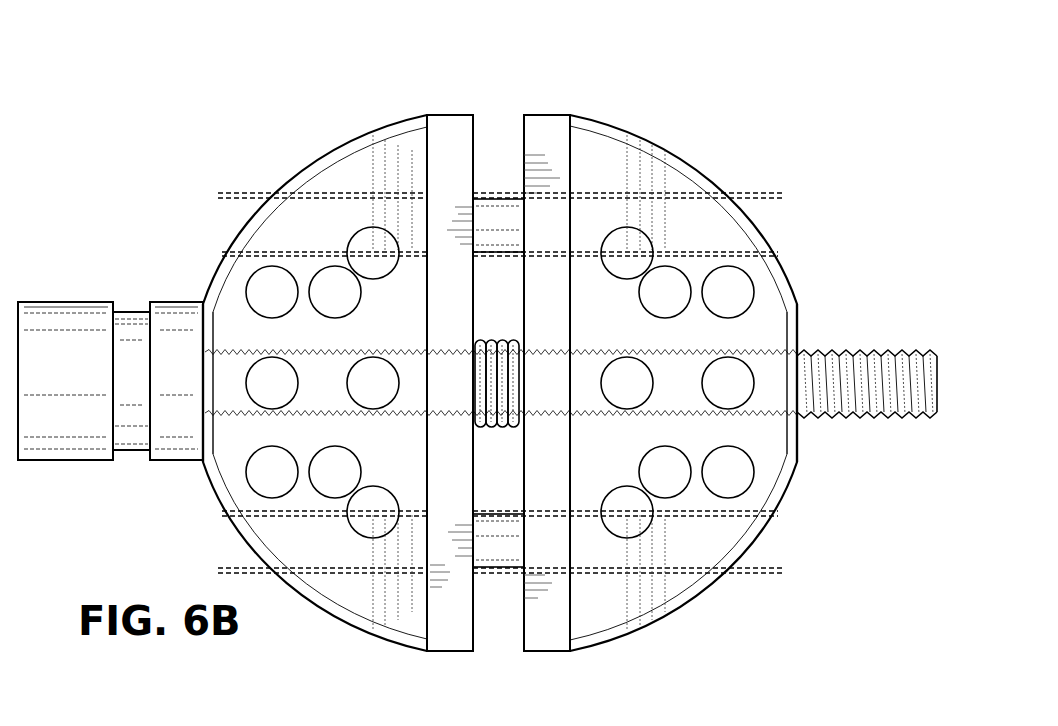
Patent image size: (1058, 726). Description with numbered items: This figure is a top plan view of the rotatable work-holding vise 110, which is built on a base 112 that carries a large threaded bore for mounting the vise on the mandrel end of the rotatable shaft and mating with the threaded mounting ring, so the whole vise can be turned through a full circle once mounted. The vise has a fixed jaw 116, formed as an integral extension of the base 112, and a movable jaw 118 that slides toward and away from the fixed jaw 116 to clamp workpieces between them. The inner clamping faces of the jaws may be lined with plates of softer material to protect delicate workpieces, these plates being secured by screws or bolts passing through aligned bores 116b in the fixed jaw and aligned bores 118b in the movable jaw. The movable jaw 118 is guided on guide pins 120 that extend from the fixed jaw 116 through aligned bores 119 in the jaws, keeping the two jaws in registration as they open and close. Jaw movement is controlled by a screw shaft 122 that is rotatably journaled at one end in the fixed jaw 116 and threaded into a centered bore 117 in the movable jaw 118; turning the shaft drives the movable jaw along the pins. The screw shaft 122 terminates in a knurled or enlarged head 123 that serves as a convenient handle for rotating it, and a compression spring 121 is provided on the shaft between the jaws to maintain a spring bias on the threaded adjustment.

The rotatable work-holding vise 110 is at (718, 140).
The base 112 is at (350, 141).
The fixed jaw 116 is at (233, 290).
The aligned bores 116b is at (257, 252).
The centered bore 117 is at (443, 345).
The movable jaw 118 is at (773, 300).
The aligned bores 118b is at (740, 255).
The aligned bores 119 is at (412, 190).
The guide pins 120 is at (500, 205).
The compression spring 121 is at (517, 381).
The screw shaft 122 is at (870, 356).
The knurled or enlarged head 123 is at (80, 313).